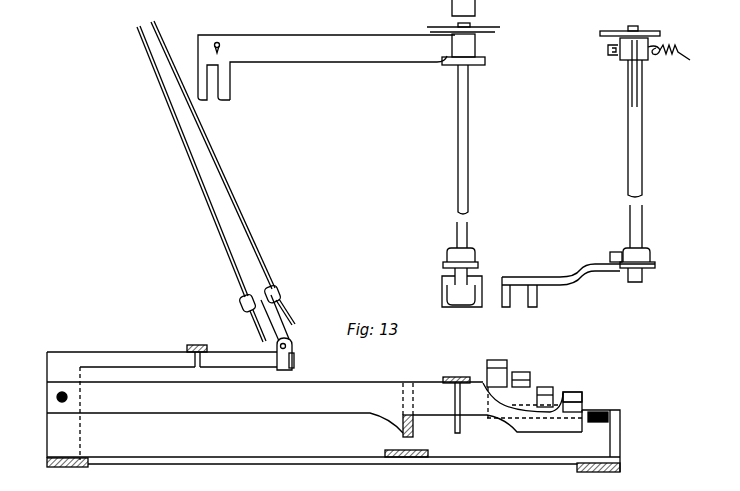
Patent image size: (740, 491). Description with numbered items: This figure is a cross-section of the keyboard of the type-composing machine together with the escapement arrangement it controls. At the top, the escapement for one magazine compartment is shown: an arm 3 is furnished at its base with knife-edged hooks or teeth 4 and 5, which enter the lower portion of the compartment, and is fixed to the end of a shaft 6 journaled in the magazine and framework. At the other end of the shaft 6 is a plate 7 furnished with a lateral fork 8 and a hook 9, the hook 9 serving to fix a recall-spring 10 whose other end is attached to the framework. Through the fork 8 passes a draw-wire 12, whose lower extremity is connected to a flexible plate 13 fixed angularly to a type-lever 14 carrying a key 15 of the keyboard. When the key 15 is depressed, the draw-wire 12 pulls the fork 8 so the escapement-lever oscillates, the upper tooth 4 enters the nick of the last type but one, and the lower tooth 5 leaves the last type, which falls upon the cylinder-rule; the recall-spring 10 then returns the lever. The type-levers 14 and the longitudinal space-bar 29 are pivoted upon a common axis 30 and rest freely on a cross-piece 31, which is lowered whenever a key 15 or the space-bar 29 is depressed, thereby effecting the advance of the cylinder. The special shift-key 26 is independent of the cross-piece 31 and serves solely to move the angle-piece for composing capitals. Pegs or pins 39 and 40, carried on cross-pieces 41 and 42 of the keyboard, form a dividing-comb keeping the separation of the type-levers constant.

The arm 3 is at (445, 277).
The upper hook or tooth 4 is at (447, 302).
The lower tooth 5 is at (470, 14).
The shaft 6 is at (466, 118).
The plate 7 is at (348, 58).
The lateral fork 8 is at (222, 73).
The hook 9 is at (221, 41).
The recall-spring 10 is at (681, 57).
The draw-wire 12 is at (222, 241).
The flexible plate 13 is at (155, 358).
The type-lever 14 is at (208, 412).
The key 15 is at (507, 365).
The special key (shift-key) 26 is at (580, 394).
The space-bar 29 is at (612, 417).
The common axis 30 is at (68, 397).
The cross-piece 31 is at (413, 431).
The peg or pin 39 is at (463, 429).
The peg or pin 40 is at (201, 376).
The cross-piece 41 is at (444, 377).
The cross-piece 42 is at (204, 351).